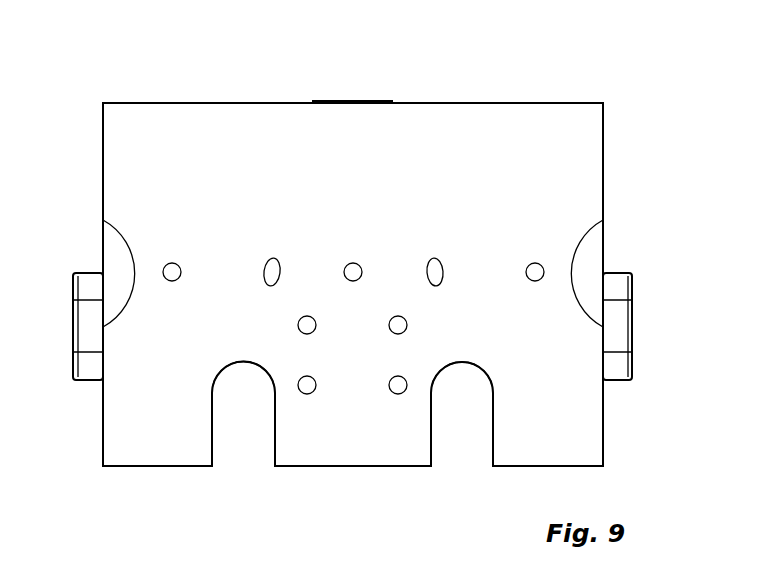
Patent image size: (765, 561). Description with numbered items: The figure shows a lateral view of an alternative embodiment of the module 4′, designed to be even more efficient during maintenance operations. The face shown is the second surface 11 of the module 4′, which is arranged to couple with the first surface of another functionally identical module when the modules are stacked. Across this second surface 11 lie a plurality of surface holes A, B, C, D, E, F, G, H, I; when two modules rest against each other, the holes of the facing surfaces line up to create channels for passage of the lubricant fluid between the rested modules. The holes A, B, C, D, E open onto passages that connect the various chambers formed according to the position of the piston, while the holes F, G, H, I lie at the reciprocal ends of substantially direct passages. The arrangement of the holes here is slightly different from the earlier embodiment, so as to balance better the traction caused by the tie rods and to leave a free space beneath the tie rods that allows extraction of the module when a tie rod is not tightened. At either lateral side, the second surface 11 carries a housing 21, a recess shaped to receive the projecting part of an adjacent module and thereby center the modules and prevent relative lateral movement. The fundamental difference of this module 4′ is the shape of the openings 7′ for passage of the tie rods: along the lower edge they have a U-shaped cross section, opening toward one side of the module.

The second surface 11 is at (136, 128).
The module 4′ is at (540, 141).
The housing 21 is at (113, 255).
The openings 7′ is at (431, 424).
The surface hole A is at (164, 265).
The surface hole B is at (266, 262).
The surface hole C is at (347, 264).
The surface hole D is at (430, 266).
The surface hole E is at (529, 264).
The surface hole F is at (406, 319).
The surface hole G is at (299, 322).
The surface hole H is at (313, 392).
The surface hole I is at (392, 392).